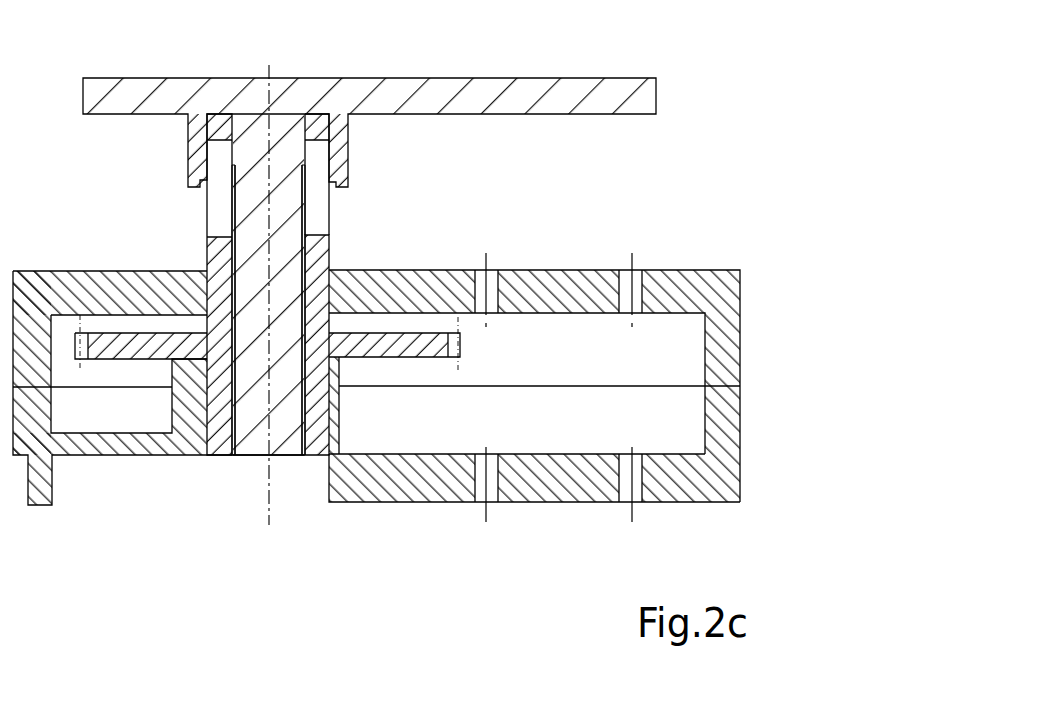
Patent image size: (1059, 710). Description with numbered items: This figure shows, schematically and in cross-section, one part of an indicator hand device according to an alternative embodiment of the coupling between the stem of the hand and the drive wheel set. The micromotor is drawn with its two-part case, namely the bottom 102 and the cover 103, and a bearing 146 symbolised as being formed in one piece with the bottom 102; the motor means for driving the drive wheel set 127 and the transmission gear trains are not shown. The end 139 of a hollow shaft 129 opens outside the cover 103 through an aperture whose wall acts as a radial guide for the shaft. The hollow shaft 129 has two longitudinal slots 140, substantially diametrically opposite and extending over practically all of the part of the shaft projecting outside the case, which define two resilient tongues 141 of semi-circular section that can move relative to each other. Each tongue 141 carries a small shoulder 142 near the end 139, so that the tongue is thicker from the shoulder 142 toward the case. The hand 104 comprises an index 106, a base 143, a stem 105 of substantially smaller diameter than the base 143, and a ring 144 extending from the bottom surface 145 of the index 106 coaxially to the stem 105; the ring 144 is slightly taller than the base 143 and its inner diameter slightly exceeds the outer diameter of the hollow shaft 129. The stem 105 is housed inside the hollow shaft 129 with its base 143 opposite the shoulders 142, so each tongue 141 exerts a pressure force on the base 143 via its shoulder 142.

The bottom 102 is at (722, 472).
The cover 103 is at (720, 296).
The hand 104 is at (283, 64).
The stem 105 is at (240, 455).
The index 106 is at (588, 90).
The drive wheel set 127 is at (350, 318).
The hollow shaft 129 is at (218, 455).
The end of the hollow shaft 139 is at (317, 155).
The longitudinal slots 140 is at (222, 182).
The tongues 141 is at (318, 215).
The small shoulder 142 is at (230, 148).
The base 143 is at (250, 127).
The ring 144 is at (340, 145).
The bottom surface 145 is at (552, 125).
The bearing 146 is at (352, 411).